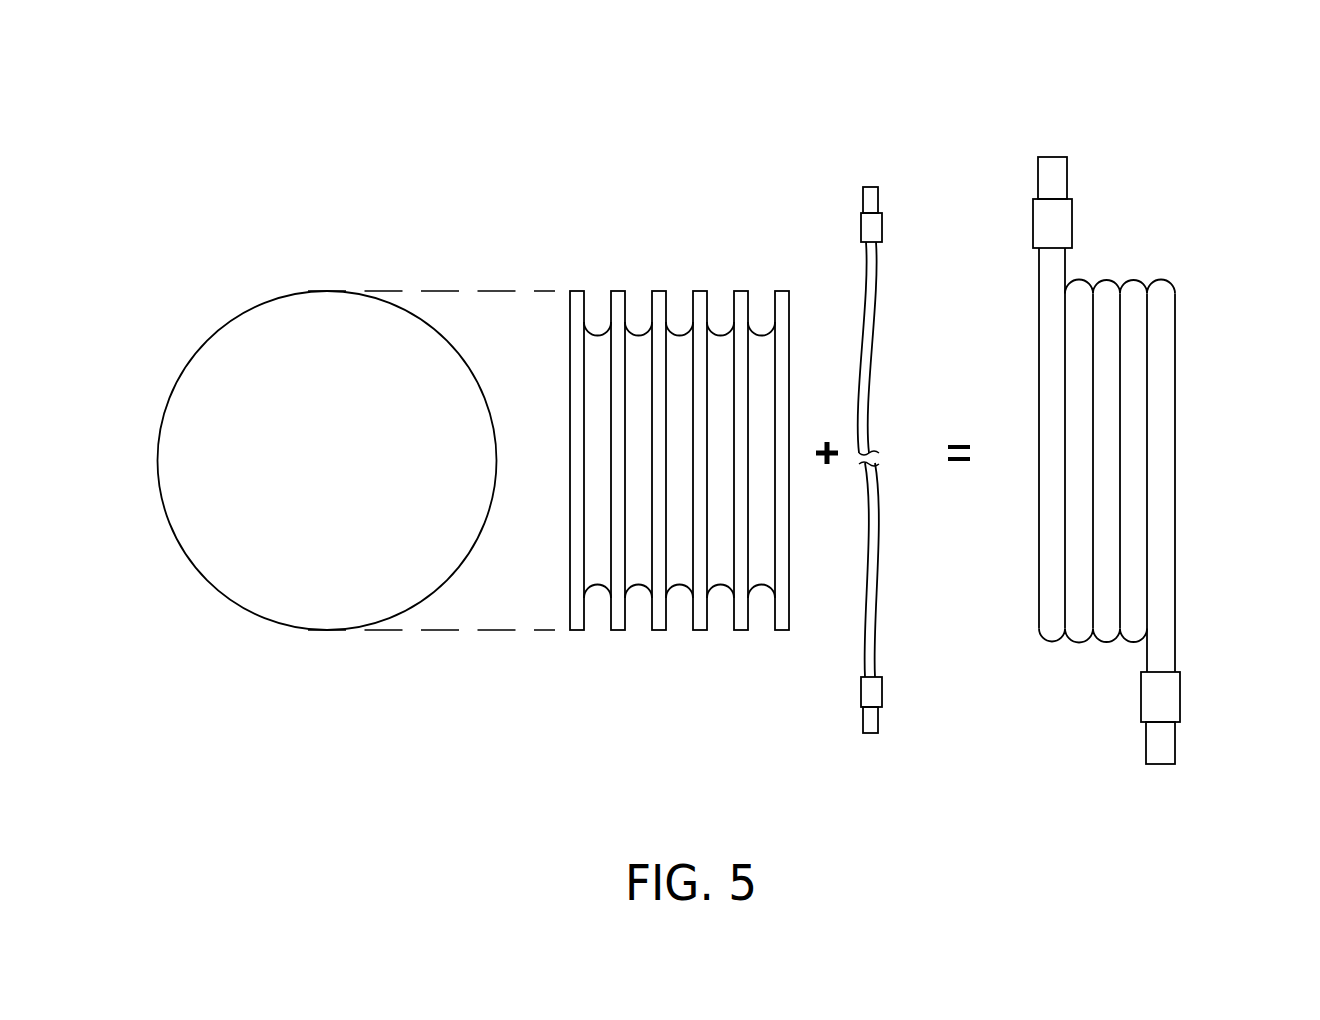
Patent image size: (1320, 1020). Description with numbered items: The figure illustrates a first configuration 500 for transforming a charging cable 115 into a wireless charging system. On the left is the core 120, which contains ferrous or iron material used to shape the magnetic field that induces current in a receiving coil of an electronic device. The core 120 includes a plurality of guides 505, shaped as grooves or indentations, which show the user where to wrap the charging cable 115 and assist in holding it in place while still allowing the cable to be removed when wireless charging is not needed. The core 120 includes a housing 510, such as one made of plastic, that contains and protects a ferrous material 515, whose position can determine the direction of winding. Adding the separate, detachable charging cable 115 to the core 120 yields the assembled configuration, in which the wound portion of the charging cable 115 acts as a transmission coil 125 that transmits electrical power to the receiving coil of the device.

The first configuration 500 is at (1106, 406).
The guides 505 is at (585, 292).
The housing 510 is at (285, 295).
The ferrous material 515 is at (762, 588).
The charging cable 115 is at (879, 318).
The core 120 is at (703, 447).
The transmission coil 125 is at (1130, 282).